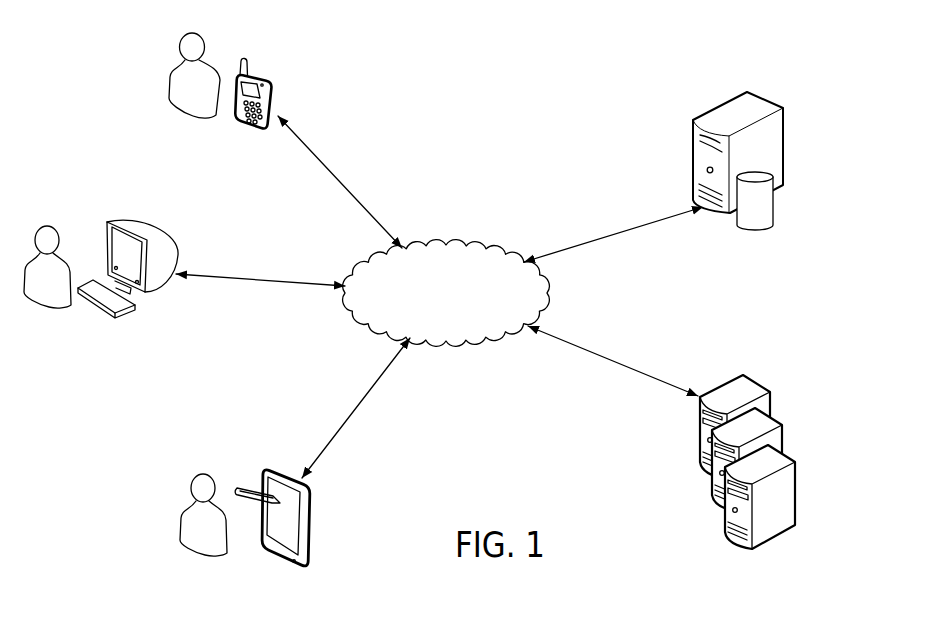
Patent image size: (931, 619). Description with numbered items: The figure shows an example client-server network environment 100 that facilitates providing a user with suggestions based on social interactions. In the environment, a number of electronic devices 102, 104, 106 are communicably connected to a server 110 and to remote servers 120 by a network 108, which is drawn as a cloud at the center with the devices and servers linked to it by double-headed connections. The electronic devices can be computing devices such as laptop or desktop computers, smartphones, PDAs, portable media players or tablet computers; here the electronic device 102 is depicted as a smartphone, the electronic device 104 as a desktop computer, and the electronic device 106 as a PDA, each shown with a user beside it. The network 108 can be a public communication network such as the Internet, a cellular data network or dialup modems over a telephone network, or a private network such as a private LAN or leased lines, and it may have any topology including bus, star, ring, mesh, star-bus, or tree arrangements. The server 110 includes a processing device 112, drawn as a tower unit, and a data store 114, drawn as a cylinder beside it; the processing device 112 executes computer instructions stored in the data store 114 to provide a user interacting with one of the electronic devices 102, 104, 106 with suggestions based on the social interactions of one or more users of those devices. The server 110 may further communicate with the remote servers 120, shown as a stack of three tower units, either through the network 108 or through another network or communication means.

The network environment 100 is at (531, 66).
The electronic device 102 is at (265, 76).
The electronic device 104 is at (151, 226).
The electronic device 106 is at (270, 466).
The network 108 is at (445, 243).
The server 110 is at (745, 155).
The processing device 112 is at (766, 91).
The data store 114 is at (773, 215).
The remote servers 120 is at (691, 523).